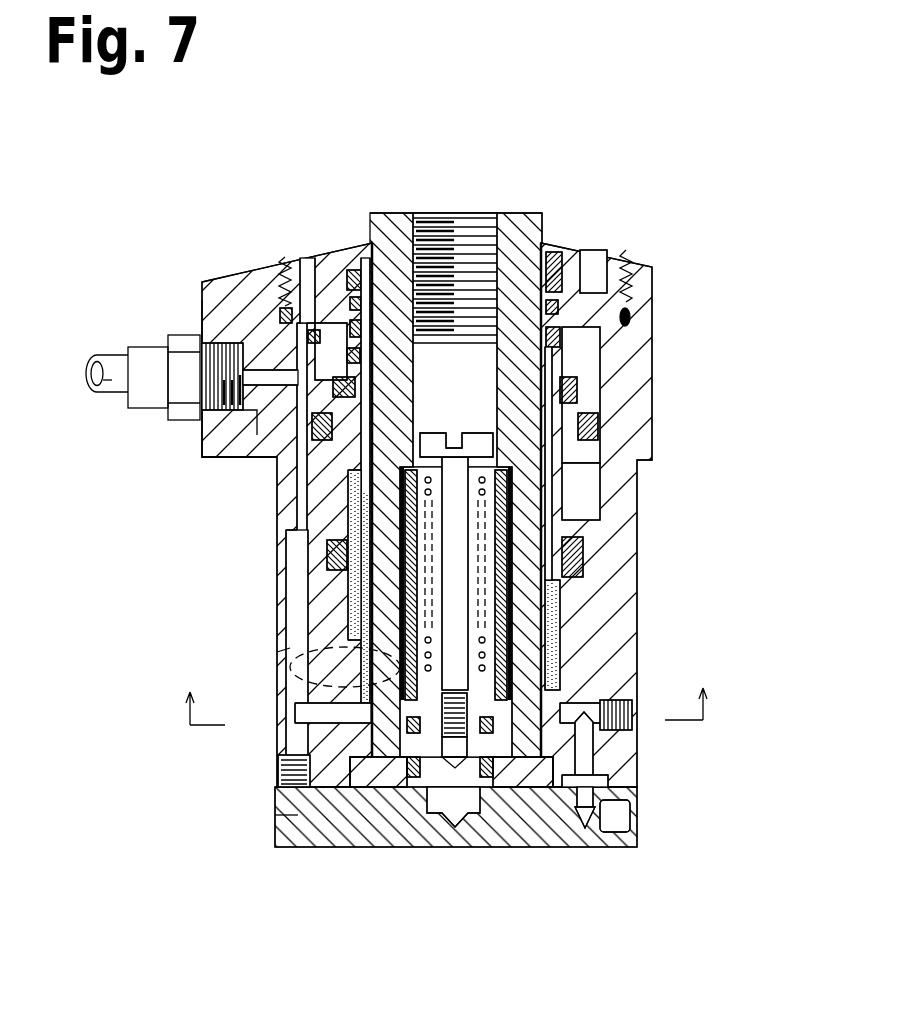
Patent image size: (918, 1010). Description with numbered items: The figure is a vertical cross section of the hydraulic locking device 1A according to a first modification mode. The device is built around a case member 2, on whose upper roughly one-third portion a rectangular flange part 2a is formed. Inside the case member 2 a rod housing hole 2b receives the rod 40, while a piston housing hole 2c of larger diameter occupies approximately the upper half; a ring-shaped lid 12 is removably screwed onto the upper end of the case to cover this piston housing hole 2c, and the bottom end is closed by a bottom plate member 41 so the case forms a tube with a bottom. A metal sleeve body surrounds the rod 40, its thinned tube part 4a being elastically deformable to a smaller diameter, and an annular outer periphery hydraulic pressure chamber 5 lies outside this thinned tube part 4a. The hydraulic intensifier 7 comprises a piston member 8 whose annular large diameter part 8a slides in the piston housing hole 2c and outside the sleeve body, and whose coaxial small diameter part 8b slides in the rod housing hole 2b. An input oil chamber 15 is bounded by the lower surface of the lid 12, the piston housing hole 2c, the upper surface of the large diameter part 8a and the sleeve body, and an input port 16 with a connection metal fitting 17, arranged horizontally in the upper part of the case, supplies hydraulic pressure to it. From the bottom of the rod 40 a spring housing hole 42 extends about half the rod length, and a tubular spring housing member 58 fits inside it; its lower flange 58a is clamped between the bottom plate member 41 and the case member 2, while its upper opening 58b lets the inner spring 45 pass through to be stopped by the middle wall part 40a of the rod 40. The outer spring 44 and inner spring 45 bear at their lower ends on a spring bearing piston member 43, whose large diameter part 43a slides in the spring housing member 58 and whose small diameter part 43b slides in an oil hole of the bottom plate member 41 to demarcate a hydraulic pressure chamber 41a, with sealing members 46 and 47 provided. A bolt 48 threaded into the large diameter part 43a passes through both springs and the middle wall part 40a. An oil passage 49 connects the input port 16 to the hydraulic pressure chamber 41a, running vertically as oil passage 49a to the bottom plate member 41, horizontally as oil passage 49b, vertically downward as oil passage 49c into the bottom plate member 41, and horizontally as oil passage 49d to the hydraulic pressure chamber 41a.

The hydraulic locking device 1A is at (452, 550).
The case member 2 is at (471, 515).
The flange part 2a is at (217, 452).
The rod housing hole 2b is at (585, 682).
The piston housing hole 2c is at (655, 392).
The thinned tube part 4a is at (325, 562).
The outer periphery hydraulic pressure chamber 5 is at (285, 545).
The hydraulic intensifier 7 is at (368, 418).
The piston member 8 is at (261, 507).
The large diameter part 8a is at (287, 478).
The small diameter part 8b is at (282, 522).
The lid 12 is at (293, 258).
The input oil chamber 15 is at (262, 372).
The input port 16 is at (213, 372).
The connection metal fitting 17 is at (145, 353).
The rod 40 is at (473, 462).
The middle wall part 40a is at (565, 482).
The bottom plate member 41 is at (421, 857).
The hydraulic pressure chamber 41a is at (430, 815).
The spring housing hole 42 is at (505, 605).
The spring bearing piston member 43 is at (583, 851).
The large diameter part 43a is at (575, 832).
The small diameter part 43b is at (512, 822).
The outer spring 44 is at (330, 652).
The inner spring 45 is at (305, 690).
The sealing member 46 is at (272, 818).
The sealing member 47 is at (388, 776).
The bolt 48 is at (500, 640).
The oil passage 49 is at (273, 650).
The oil passage 49a is at (257, 435).
The oil passage 49b is at (275, 765).
The oil passage 49c is at (590, 757).
The oil passage 49d is at (482, 812).
The spring housing member 58 is at (517, 653).
The flange 58a is at (345, 782).
The opening 58b is at (444, 466).